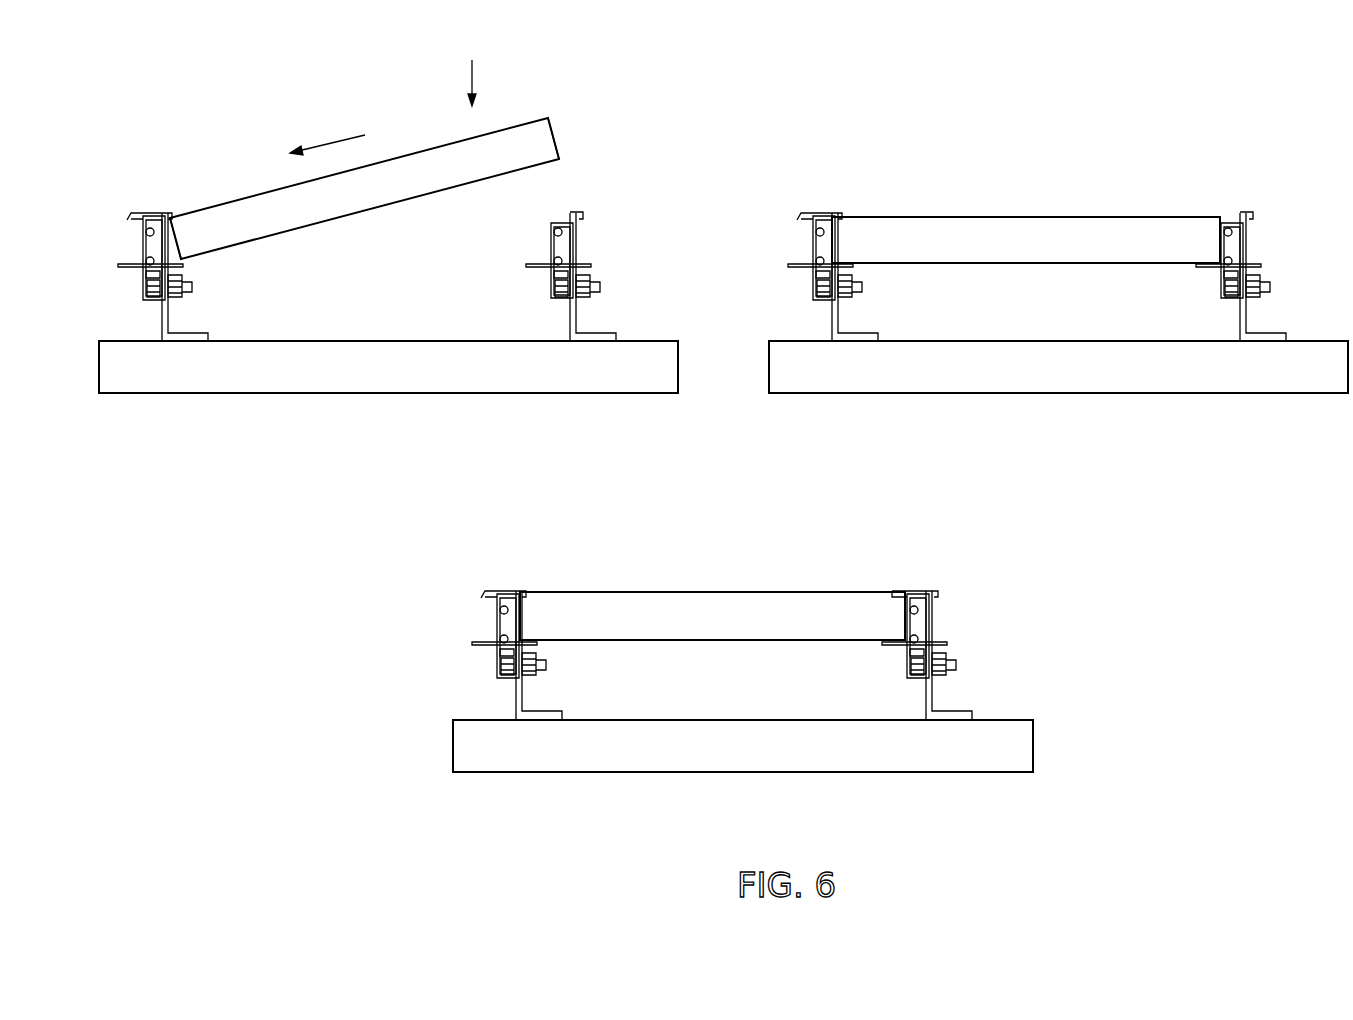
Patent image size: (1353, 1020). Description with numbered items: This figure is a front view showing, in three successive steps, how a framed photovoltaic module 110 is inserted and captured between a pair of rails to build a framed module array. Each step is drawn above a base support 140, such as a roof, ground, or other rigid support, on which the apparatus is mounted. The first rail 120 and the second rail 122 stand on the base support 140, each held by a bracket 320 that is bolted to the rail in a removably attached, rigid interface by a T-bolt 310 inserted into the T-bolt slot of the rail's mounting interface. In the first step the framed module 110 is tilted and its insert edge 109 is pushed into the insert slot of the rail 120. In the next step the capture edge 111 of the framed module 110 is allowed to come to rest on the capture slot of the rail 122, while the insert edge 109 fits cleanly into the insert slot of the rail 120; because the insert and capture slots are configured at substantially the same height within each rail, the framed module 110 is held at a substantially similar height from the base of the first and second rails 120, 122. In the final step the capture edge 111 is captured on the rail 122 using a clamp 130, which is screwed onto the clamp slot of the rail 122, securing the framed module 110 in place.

The insert edge 109 is at (188, 213).
The framed photovoltaic module 110 is at (422, 168).
The capture edge 111 is at (538, 118).
The rail 120 is at (458, 475).
The rail 122 is at (864, 475).
The clamp 130 is at (143, 214).
The base support 140 is at (223, 370).
The T-bolt 310 is at (586, 295).
The bracket 320 is at (573, 322).